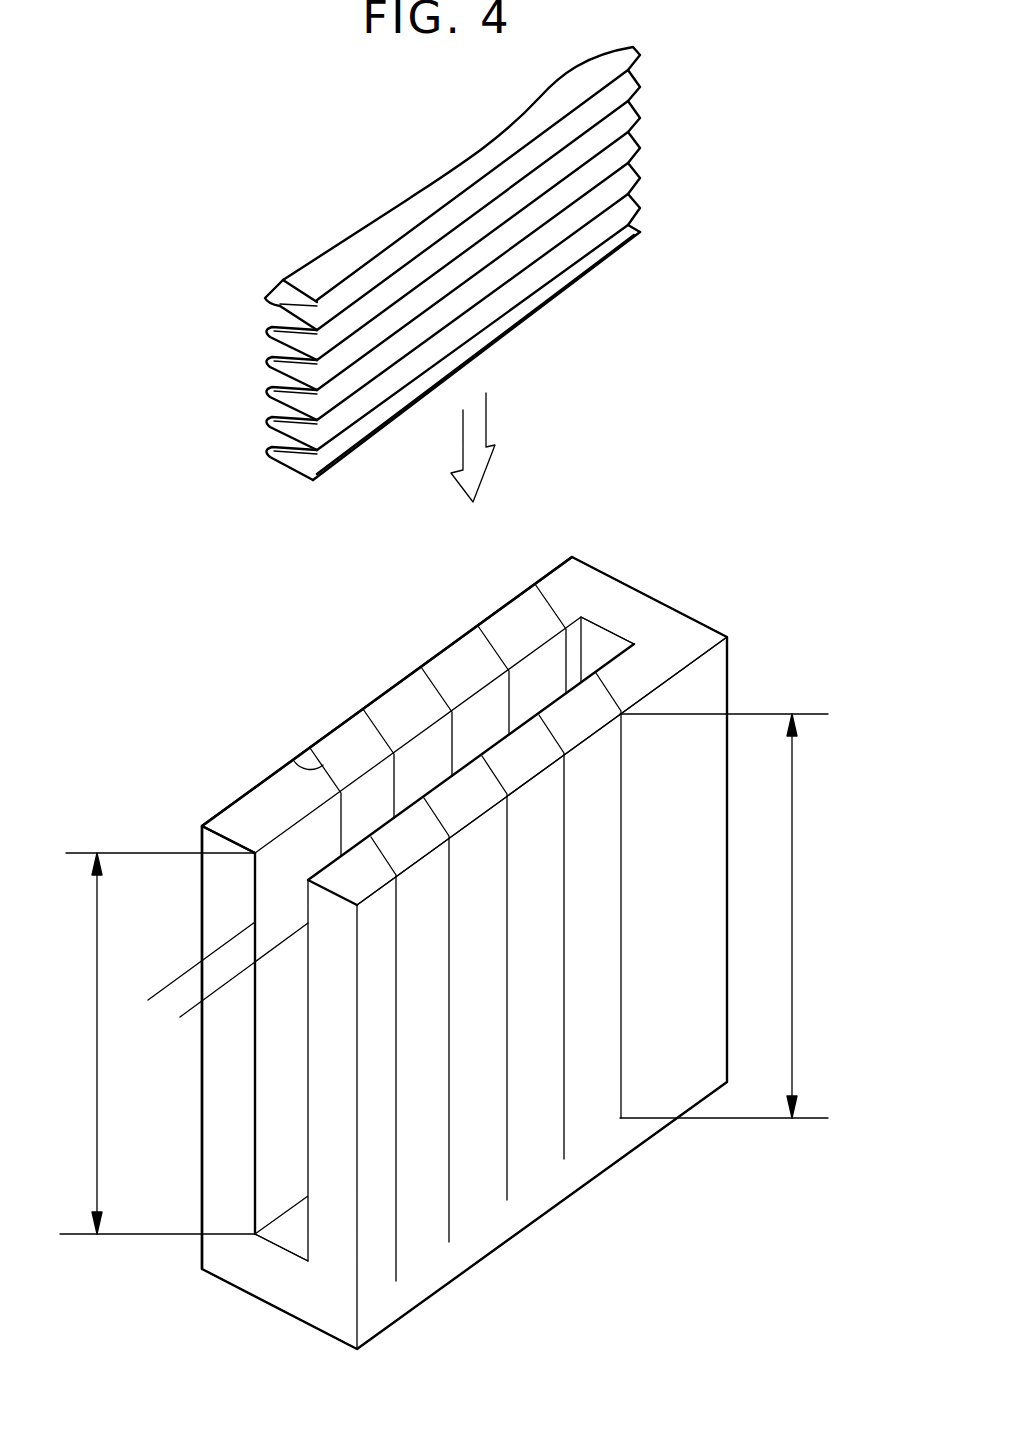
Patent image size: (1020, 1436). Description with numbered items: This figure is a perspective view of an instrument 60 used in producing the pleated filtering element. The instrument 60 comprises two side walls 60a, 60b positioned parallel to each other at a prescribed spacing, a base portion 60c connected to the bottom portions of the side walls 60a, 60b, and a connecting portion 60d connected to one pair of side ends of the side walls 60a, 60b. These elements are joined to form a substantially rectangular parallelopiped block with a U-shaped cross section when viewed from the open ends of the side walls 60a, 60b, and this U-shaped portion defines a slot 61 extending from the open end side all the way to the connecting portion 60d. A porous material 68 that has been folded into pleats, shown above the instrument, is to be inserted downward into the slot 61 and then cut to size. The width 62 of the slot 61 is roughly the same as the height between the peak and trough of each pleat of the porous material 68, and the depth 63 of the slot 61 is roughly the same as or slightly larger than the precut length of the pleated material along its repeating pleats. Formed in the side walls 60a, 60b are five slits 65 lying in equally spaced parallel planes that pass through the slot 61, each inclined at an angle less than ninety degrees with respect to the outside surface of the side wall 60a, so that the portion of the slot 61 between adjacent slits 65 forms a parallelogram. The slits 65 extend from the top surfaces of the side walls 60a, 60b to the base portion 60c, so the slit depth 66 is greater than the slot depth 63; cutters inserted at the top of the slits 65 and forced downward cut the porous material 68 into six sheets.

The instrument 60 is at (773, 563).
The side wall 60a is at (252, 803).
The side wall 60b is at (598, 745).
The base portion 60c is at (258, 1290).
The connecting portion 60d is at (655, 610).
The slot 61 is at (263, 1160).
The width of the slot 62 is at (184, 1008).
The depth of the slot 63 is at (153, 1043).
The slits 65 is at (553, 604).
The slit depth 66 is at (728, 916).
The porous material 68 is at (672, 175).